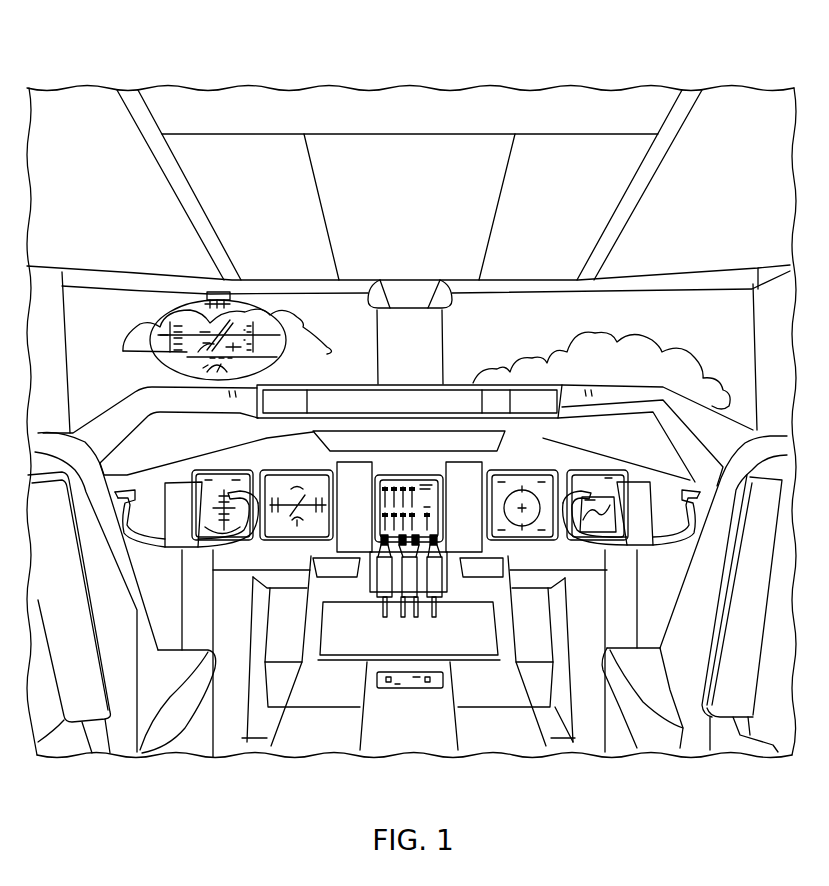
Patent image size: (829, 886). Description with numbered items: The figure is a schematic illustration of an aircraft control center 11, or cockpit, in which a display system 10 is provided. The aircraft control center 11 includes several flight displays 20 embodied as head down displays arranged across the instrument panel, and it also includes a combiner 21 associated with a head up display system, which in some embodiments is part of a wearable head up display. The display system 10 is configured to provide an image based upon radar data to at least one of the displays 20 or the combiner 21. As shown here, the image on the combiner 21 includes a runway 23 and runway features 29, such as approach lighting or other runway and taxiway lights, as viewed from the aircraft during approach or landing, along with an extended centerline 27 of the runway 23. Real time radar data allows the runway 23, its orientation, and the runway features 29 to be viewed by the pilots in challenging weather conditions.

The display system 10 is at (355, 250).
The aircraft control center 11 is at (553, 60).
The flight displays 20 is at (228, 473).
The combiner 21 is at (273, 327).
The runway 23 is at (220, 328).
The extended centerline 27 is at (207, 341).
The runway features 29 is at (227, 340).